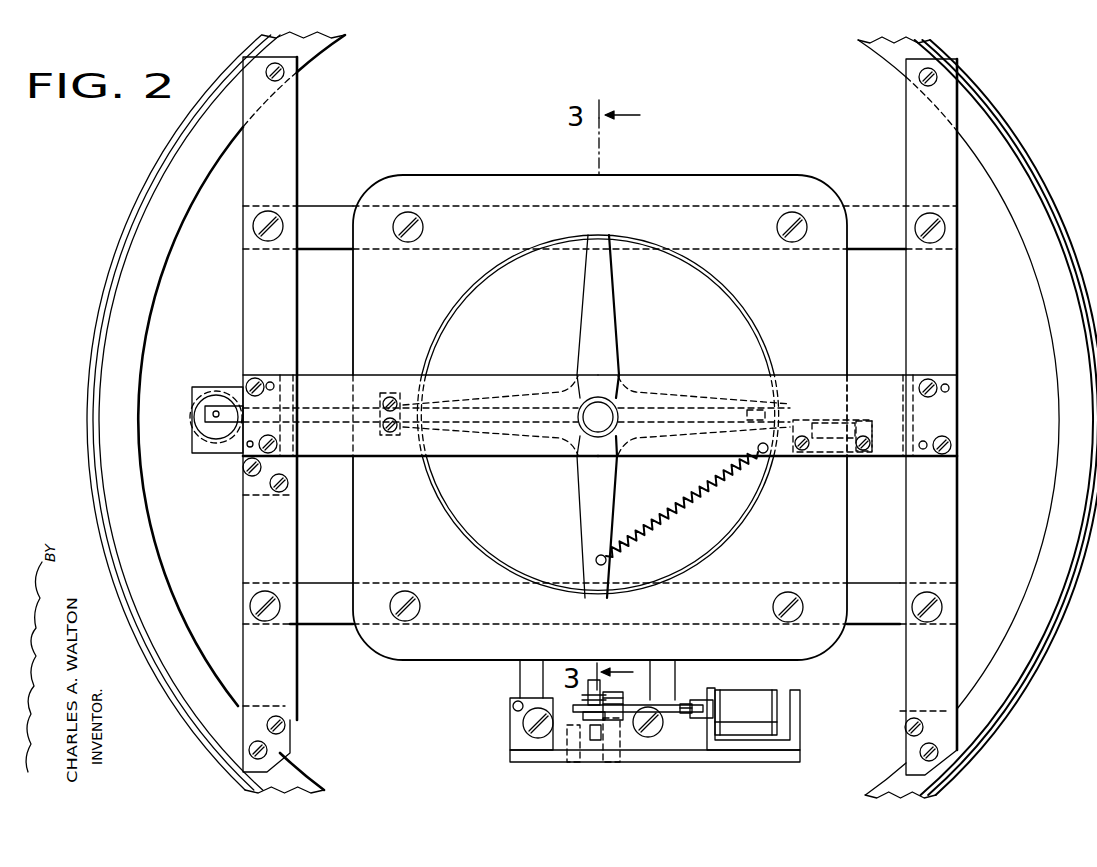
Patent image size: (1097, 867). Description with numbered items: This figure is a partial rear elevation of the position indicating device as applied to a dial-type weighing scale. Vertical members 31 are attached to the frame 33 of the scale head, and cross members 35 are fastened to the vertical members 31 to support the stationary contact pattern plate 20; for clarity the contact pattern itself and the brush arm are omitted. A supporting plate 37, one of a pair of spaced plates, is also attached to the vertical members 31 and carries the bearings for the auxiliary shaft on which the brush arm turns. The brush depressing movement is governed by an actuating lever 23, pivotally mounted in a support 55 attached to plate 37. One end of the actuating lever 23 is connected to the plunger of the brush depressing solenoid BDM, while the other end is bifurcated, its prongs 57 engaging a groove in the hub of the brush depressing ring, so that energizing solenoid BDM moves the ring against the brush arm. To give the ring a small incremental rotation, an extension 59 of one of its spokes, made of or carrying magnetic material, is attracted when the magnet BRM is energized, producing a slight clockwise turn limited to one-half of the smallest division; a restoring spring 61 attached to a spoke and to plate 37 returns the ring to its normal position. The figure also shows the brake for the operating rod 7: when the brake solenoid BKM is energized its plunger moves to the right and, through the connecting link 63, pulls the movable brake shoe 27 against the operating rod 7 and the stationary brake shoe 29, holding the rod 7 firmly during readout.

The stationary contact pattern plate 20 is at (686, 176).
The actuating lever 23 is at (340, 409).
The movable brake shoe 27 is at (575, 706).
The stationary brake shoe 29 is at (648, 718).
The vertical members 31 is at (242, 654).
The frame 33 is at (203, 622).
The cross members 35 is at (881, 213).
The supporting plate 37 is at (882, 383).
The support 55 is at (390, 393).
The prongs 57 is at (585, 398).
The extension 59 is at (866, 420).
The restoring spring 61 is at (690, 496).
The connecting link 63 is at (622, 706).
The operating rod 7 is at (590, 742).
The brush depressing solenoid BDM is at (208, 400).
The magnet BRM is at (825, 432).
The brake solenoid BKM is at (778, 693).